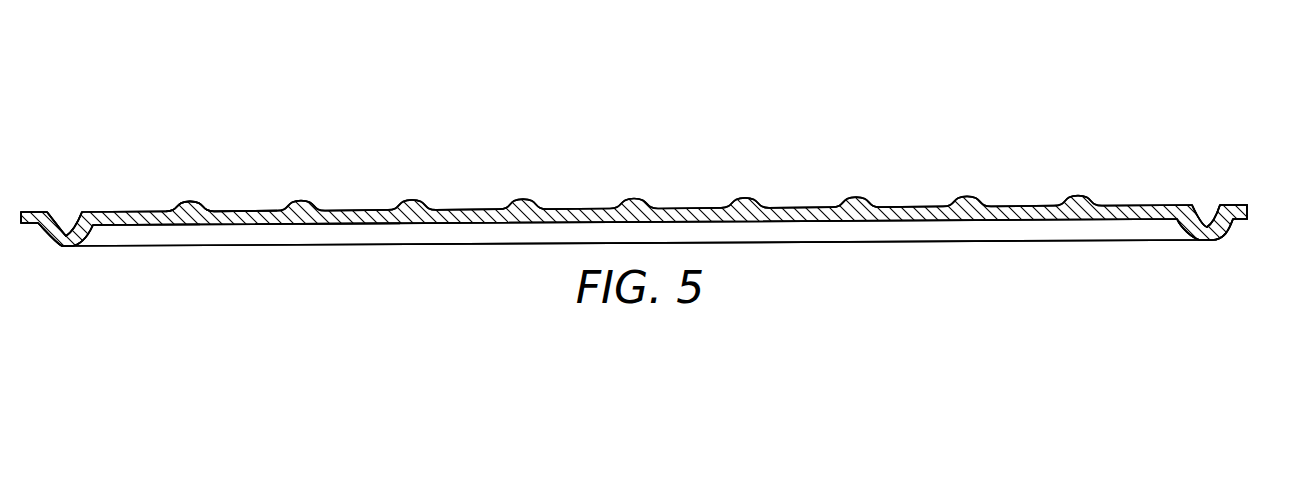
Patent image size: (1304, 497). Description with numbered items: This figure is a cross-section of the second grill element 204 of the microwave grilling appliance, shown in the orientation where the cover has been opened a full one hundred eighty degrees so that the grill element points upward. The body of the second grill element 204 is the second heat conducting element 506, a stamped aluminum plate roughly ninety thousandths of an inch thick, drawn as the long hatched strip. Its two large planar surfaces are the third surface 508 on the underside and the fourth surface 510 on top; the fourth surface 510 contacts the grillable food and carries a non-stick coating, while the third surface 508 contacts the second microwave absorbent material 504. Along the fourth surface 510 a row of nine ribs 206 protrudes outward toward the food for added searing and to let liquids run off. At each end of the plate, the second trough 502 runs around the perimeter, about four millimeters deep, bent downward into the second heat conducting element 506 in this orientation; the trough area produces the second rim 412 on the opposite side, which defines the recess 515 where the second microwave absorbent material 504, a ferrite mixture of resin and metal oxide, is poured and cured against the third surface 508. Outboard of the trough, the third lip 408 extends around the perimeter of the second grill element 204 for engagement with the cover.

The second grill element 204 is at (872, 150).
The ribs 206 is at (188, 191).
The third lip 408 is at (28, 230).
The second rim 412 is at (73, 266).
The second trough 502 is at (67, 232).
The second microwave absorbent material 504 is at (1117, 225).
The second heat conducting element 506 is at (452, 218).
The third surface 508 is at (343, 227).
The fourth surface 510 is at (335, 210).
The recess 515 is at (93, 228).